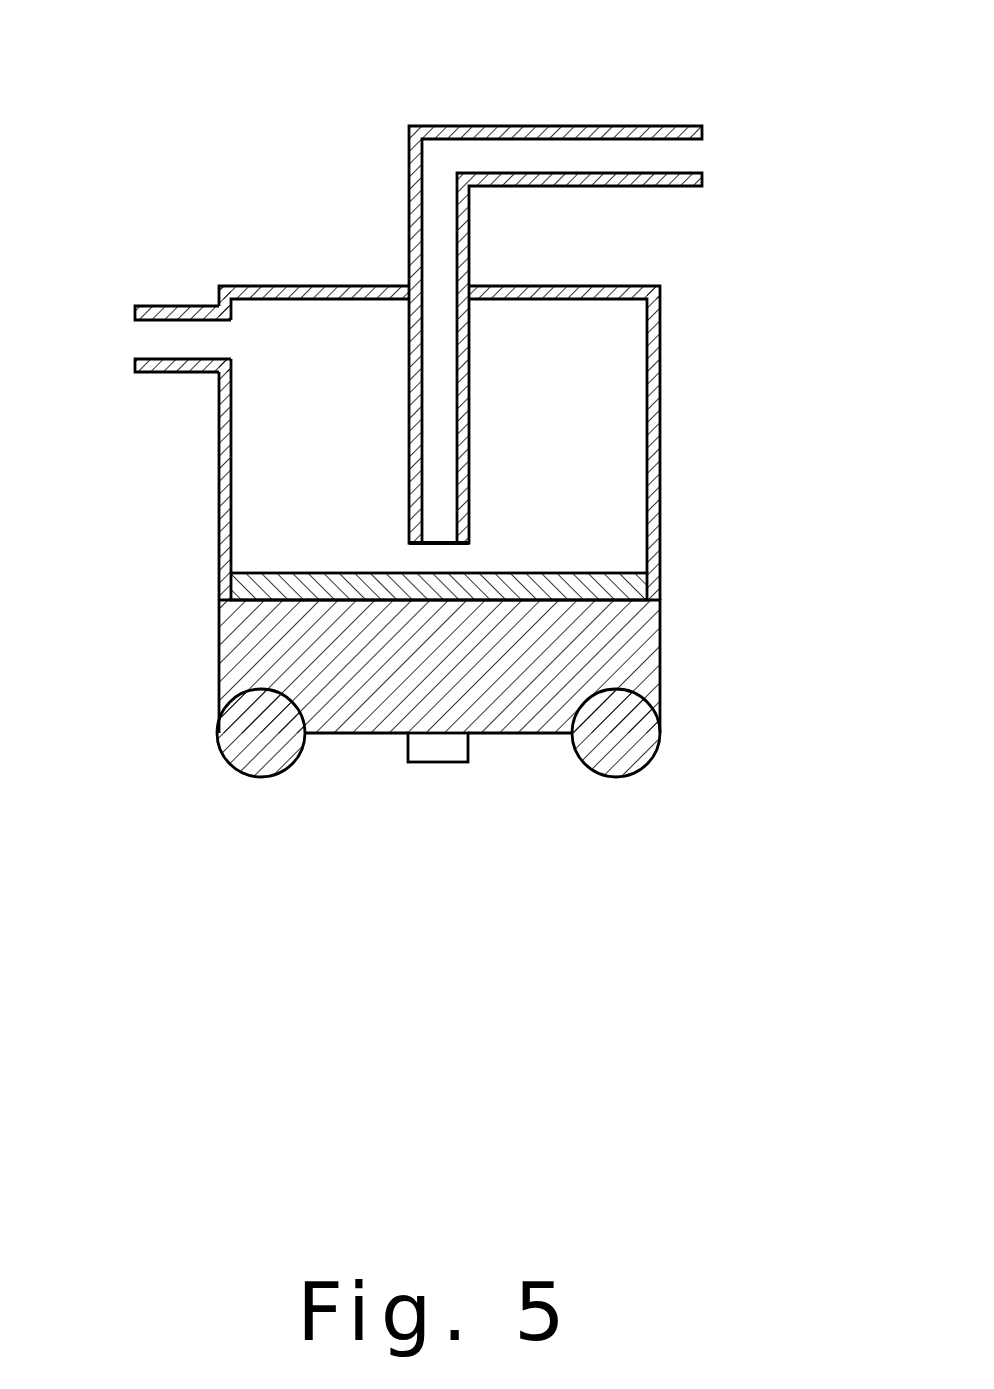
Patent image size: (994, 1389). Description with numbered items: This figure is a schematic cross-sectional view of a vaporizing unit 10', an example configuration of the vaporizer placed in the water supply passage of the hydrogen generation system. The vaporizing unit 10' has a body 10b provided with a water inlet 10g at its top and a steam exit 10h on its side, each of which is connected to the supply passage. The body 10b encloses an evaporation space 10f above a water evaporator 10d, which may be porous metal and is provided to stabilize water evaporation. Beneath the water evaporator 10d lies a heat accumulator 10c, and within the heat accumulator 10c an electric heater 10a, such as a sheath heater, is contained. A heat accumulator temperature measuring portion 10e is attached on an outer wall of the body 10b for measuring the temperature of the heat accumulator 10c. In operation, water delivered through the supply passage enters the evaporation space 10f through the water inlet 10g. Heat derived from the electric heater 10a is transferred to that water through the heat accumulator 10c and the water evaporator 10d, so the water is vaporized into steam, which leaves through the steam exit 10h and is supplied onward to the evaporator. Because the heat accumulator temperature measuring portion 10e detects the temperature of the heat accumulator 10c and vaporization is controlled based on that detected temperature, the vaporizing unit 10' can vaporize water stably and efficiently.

The vaporizing unit 10' is at (418, 388).
The electric heater 10a is at (623, 750).
The body 10b is at (218, 525).
The heat accumulator 10c is at (628, 636).
The water evaporator 10d is at (628, 590).
The heat accumulator temperature measuring portion 10e is at (445, 748).
The evaporation space 10f is at (625, 431).
The water inlet 10g is at (622, 124).
The steam exit 10h is at (170, 373).